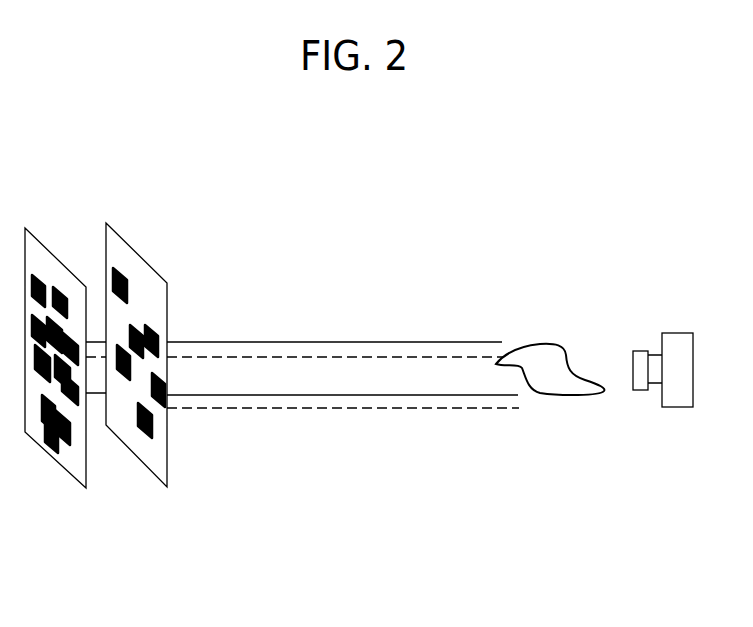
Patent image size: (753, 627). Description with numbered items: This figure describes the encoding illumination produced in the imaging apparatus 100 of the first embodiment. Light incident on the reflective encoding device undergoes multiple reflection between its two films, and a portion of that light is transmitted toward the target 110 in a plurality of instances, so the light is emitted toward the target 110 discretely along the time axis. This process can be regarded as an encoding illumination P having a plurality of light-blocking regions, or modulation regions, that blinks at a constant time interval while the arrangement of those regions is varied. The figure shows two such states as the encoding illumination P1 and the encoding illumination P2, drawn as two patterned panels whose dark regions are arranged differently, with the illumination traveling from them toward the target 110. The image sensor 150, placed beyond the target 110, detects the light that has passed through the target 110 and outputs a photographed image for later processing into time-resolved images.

The imaging apparatus 100 is at (508, 190).
The target 110 is at (563, 396).
The image sensor 150 is at (678, 407).
The encoding illumination P is at (96, 369).
The encoding illumination (first state) P1 is at (117, 234).
The encoding illumination (second state) P2 is at (41, 242).